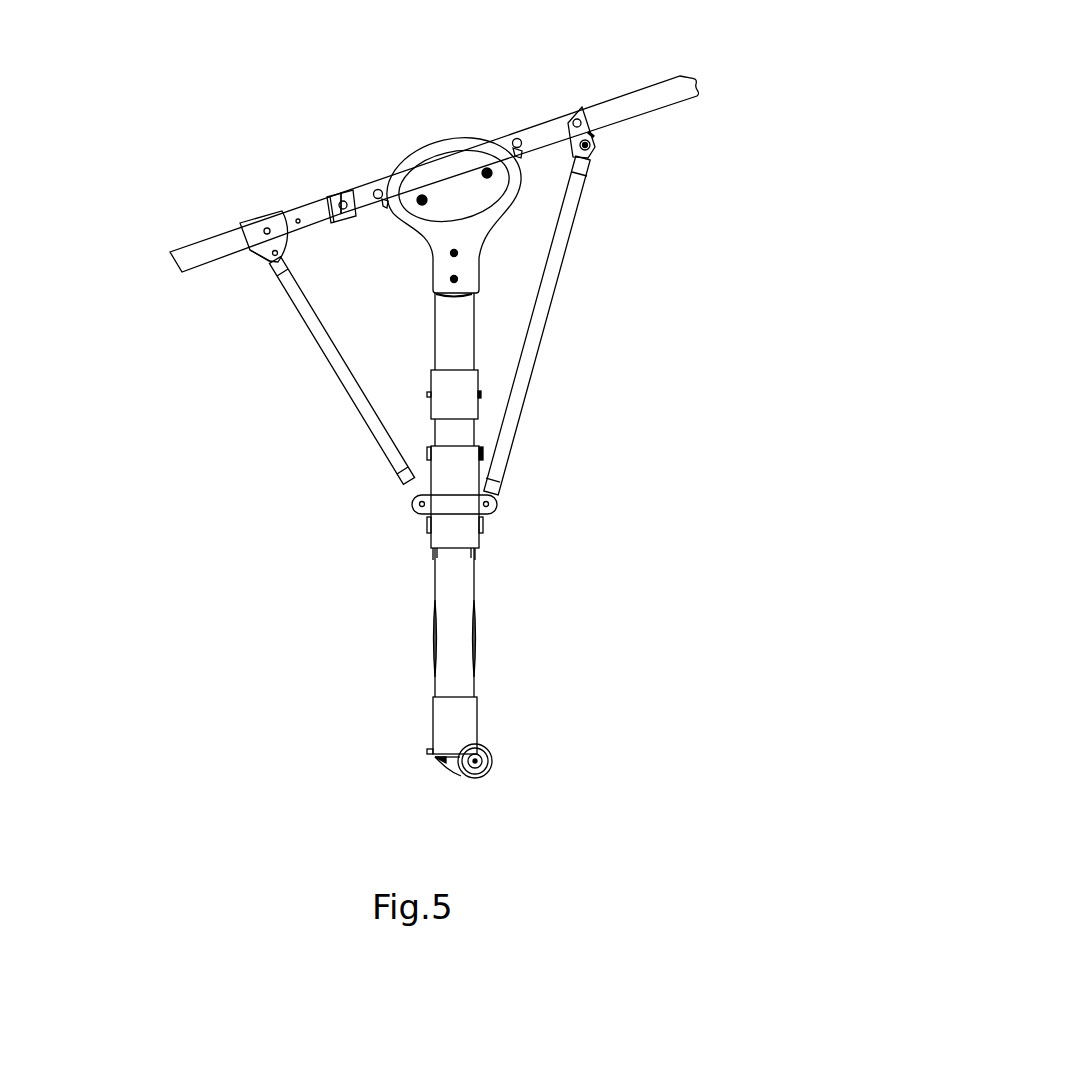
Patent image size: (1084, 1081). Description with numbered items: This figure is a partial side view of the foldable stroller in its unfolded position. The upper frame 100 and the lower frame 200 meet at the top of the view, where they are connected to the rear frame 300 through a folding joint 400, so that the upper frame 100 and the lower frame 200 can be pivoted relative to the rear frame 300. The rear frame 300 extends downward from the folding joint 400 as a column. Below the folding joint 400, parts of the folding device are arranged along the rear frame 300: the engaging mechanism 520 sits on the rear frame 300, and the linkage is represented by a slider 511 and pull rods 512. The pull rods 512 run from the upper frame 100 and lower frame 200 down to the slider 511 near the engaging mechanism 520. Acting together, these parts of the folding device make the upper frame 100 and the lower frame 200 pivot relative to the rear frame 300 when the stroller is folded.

The upper frame 100 is at (623, 108).
The lower frame 200 is at (226, 242).
The rear frame 300 is at (456, 313).
The folding joint 400 is at (456, 173).
The slider 511 is at (462, 505).
The pull rod 512 is at (332, 355).
The engaging mechanism 520 is at (449, 463).